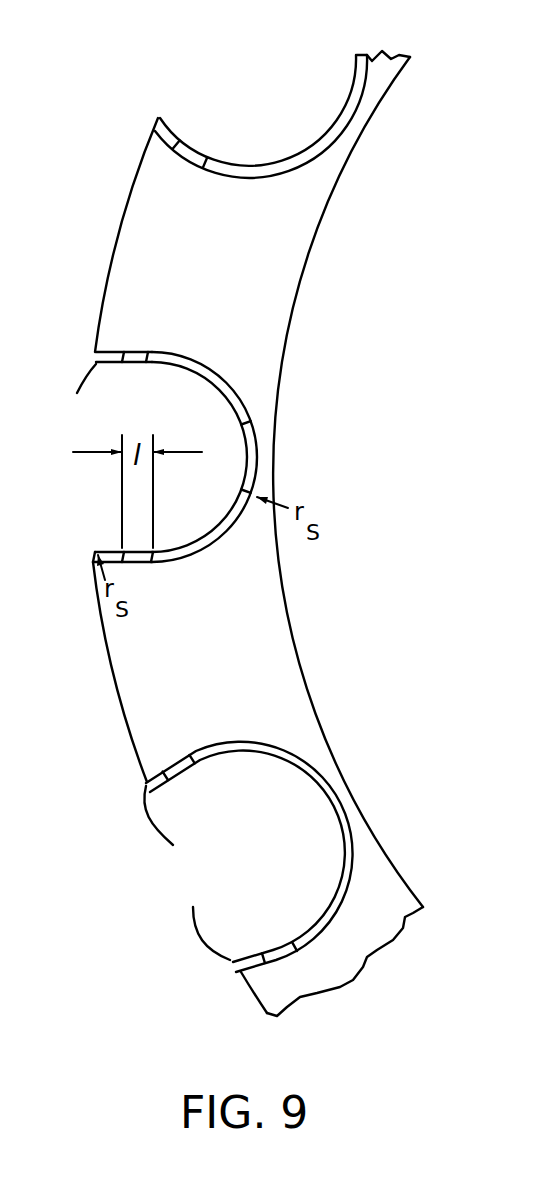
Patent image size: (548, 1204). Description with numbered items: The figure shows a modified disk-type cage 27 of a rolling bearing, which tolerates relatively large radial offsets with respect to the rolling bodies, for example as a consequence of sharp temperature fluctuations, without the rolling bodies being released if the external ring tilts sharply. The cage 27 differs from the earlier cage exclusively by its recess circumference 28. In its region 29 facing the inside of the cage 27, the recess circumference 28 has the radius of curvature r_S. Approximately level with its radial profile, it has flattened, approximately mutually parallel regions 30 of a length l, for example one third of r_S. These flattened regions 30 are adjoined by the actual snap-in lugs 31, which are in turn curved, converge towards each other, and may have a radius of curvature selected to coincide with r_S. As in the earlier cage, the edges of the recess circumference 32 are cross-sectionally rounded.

The disk-type cage 27 is at (135, 178).
The recess circumference 28 is at (287, 763).
The region facing the inside of the cage 29 is at (257, 422).
The flattened regions 30 is at (143, 352).
The snap-in lugs 31 is at (145, 662).
The recess circumference 32 is at (288, 166).